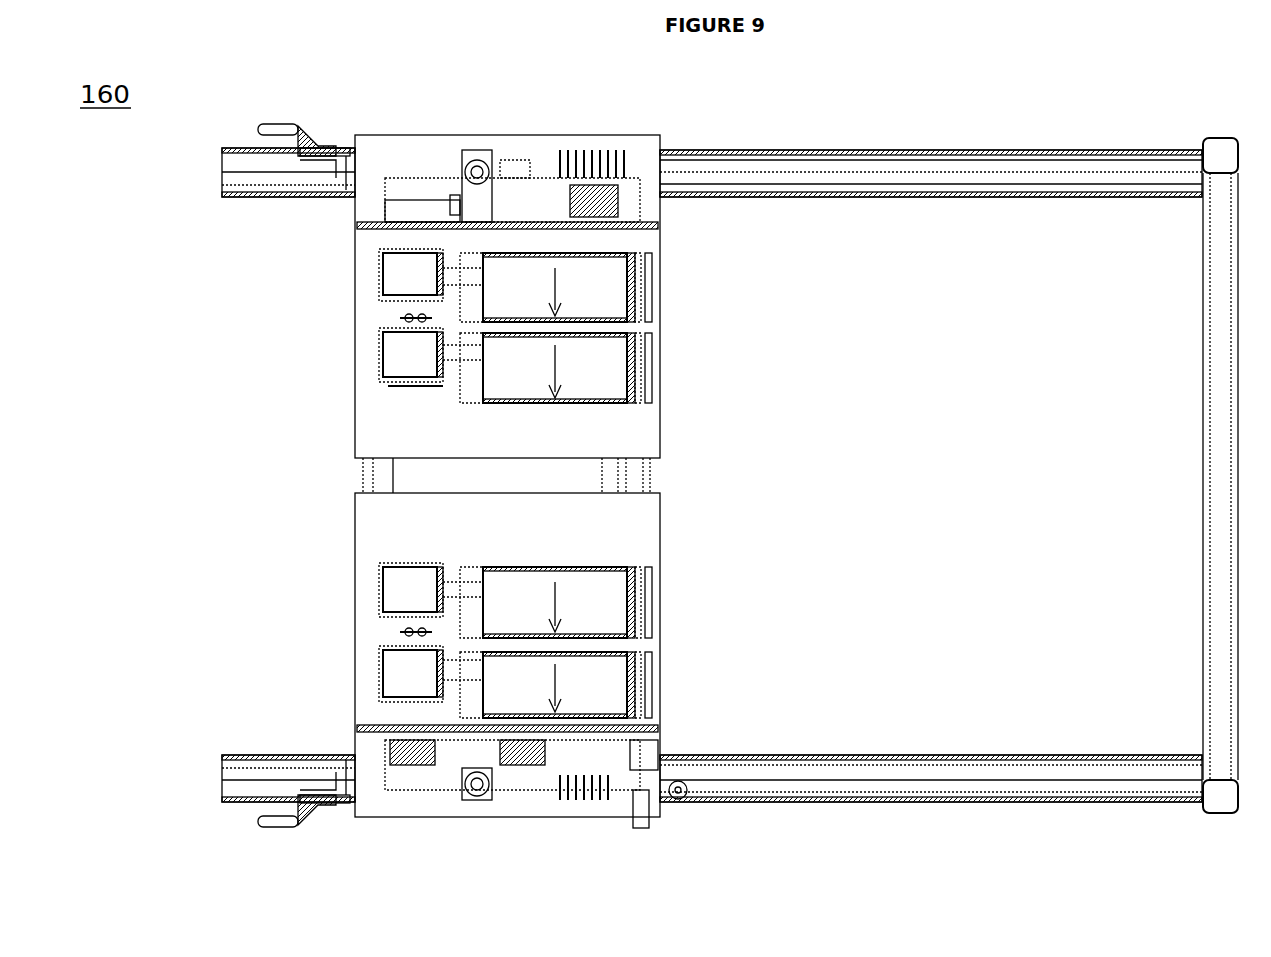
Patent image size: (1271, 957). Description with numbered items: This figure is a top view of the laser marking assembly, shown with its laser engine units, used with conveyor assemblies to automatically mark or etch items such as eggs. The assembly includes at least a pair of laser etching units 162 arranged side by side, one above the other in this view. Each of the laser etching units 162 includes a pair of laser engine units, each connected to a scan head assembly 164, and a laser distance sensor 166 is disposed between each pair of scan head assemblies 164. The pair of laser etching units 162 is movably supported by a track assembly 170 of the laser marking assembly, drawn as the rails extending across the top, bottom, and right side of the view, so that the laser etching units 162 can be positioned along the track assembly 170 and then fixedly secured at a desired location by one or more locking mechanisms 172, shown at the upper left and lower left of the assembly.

The laser etching unit 162 is at (608, 290).
The scan head assembly 164 is at (403, 273).
The laser distance sensor 166 is at (400, 318).
The track assembly 170 is at (1035, 802).
The locking mechanism 172 is at (300, 128).